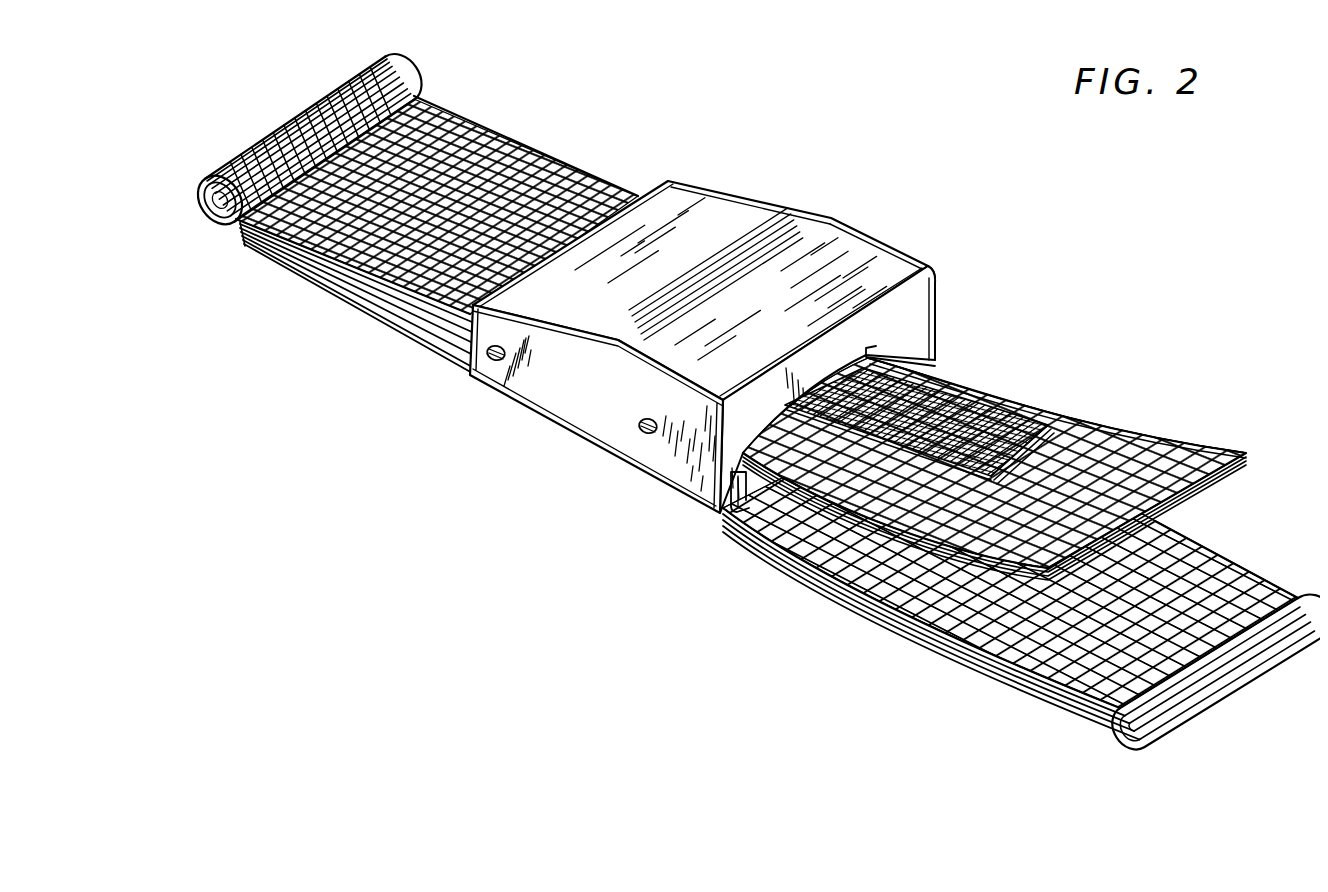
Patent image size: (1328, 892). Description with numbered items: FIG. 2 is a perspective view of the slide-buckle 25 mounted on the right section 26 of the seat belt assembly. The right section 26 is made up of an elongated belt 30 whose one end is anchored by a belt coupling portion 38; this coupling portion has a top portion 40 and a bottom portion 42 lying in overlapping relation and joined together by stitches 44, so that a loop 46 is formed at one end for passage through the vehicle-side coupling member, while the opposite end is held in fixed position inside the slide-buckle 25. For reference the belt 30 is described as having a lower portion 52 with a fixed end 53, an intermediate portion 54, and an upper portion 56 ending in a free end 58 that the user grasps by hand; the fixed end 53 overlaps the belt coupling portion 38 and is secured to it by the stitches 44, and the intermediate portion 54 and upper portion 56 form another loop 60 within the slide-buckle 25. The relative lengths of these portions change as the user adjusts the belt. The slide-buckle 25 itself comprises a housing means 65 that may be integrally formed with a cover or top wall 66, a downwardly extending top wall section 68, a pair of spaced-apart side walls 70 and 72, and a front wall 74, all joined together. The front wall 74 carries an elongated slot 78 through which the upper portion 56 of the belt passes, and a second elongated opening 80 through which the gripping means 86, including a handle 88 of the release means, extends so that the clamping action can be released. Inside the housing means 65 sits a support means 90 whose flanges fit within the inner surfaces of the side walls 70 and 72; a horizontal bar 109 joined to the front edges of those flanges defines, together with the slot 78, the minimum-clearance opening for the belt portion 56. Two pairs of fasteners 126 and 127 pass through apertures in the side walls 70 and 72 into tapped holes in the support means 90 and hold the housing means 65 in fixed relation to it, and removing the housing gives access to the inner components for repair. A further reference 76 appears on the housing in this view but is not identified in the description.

The slide-buckle 25 is at (725, 318).
The right section 26 is at (1021, 596).
The elongated belt 30 is at (407, 334).
The belt coupling portion 38 is at (405, 225).
The top portion 40 is at (303, 248).
The bottom portion 42 is at (352, 291).
The stitches 44 is at (447, 147).
The loop 46 is at (202, 214).
The lower portion 52 is at (800, 554).
The fixed end 53 is at (253, 241).
The intermediate portion 54 is at (890, 593).
The upper portion 56 is at (1018, 467).
The free end 58 is at (1240, 453).
The loop 60 is at (1122, 740).
The housing means 65 is at (673, 193).
The cover or top wall 66 is at (853, 243).
The top wall section 68 is at (750, 193).
The side wall 70 is at (900, 260).
The side wall 72 is at (587, 409).
The front wall 74 is at (927, 284).
The lid left edge 76 is at (678, 192).
The elongated opening or slot 78 is at (928, 354).
The second elongated opening 80 is at (859, 382).
The gripping means 86 is at (1042, 420).
The handle 88 is at (1010, 406).
The support means 90 is at (715, 524).
The support member or bar 109 is at (744, 494).
The fasteners 126 is at (488, 357).
The fasteners 127 is at (633, 434).